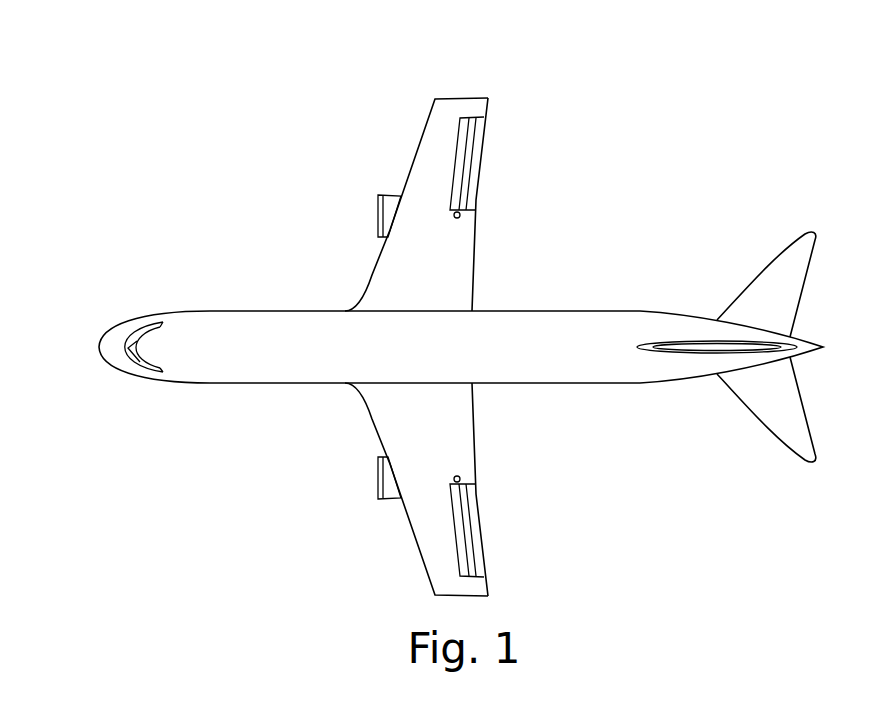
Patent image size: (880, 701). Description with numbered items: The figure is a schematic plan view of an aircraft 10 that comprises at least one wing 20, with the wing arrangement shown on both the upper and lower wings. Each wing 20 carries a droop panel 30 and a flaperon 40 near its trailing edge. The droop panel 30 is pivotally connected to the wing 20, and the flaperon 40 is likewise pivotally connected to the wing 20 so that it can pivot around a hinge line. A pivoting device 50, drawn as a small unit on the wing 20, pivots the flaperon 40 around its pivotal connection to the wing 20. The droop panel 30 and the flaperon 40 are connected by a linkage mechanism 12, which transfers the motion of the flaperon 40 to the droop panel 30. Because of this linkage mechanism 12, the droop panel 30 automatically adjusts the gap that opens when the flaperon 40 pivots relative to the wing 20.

The aircraft 10 is at (637, 210).
The linkage mechanism 12 is at (473, 184).
The wing 20 is at (437, 143).
The droop panel 30 is at (464, 116).
The flaperon 40 is at (481, 115).
The pivoting device 50 is at (454, 216).